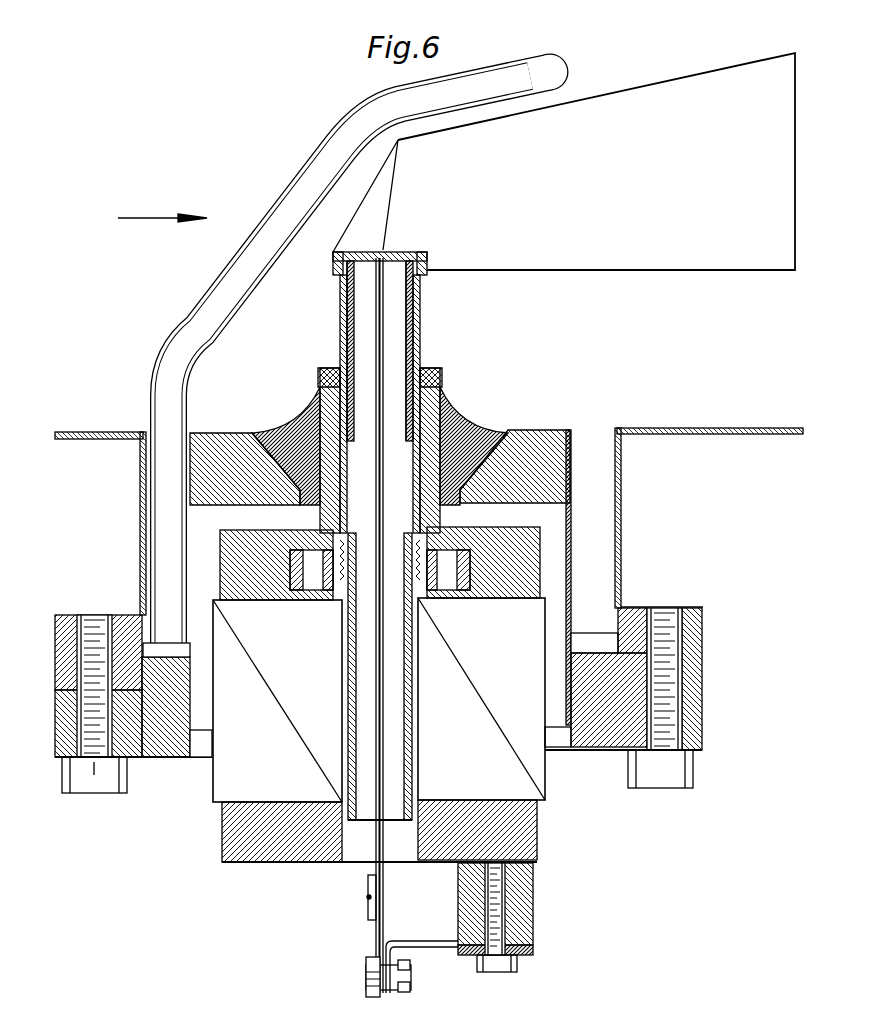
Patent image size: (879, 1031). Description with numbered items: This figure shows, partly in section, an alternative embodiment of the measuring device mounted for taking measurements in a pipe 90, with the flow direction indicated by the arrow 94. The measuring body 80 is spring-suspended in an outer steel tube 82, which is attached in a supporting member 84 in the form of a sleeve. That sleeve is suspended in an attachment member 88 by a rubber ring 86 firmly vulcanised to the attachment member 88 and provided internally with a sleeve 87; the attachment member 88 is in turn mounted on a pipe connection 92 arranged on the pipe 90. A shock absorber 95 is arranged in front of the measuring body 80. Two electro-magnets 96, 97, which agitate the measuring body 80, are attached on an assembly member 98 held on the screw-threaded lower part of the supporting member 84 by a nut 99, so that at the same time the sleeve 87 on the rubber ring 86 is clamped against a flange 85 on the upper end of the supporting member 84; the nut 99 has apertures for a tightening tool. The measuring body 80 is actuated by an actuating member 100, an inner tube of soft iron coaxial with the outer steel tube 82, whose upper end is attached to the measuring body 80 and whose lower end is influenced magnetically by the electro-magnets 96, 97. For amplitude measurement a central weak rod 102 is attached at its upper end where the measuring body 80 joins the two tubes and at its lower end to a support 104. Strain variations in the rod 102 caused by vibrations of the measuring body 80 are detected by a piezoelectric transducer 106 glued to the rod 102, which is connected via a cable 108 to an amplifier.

The measuring body 80 is at (738, 233).
The outer steel tube 82 is at (340, 307).
The supporting member 84 is at (437, 378).
The flange 85 is at (435, 368).
The rubber ring 86 is at (487, 430).
The sleeve 87 is at (440, 423).
The attachment member 88 is at (572, 440).
The pipe 90 is at (762, 434).
The pipe connection 92 is at (621, 540).
The arrow 94 is at (178, 216).
The shock absorber 95 is at (199, 302).
The electro-magnet 96 is at (253, 777).
The electro-magnet 97 is at (543, 770).
The assembly member 98 is at (273, 847).
The nut 99 is at (463, 588).
The actuating member 100 is at (405, 808).
The central weak rod 102 is at (385, 700).
The support 104 is at (440, 943).
The piezoelectric transducer 106 is at (367, 922).
The cable 108 is at (367, 897).